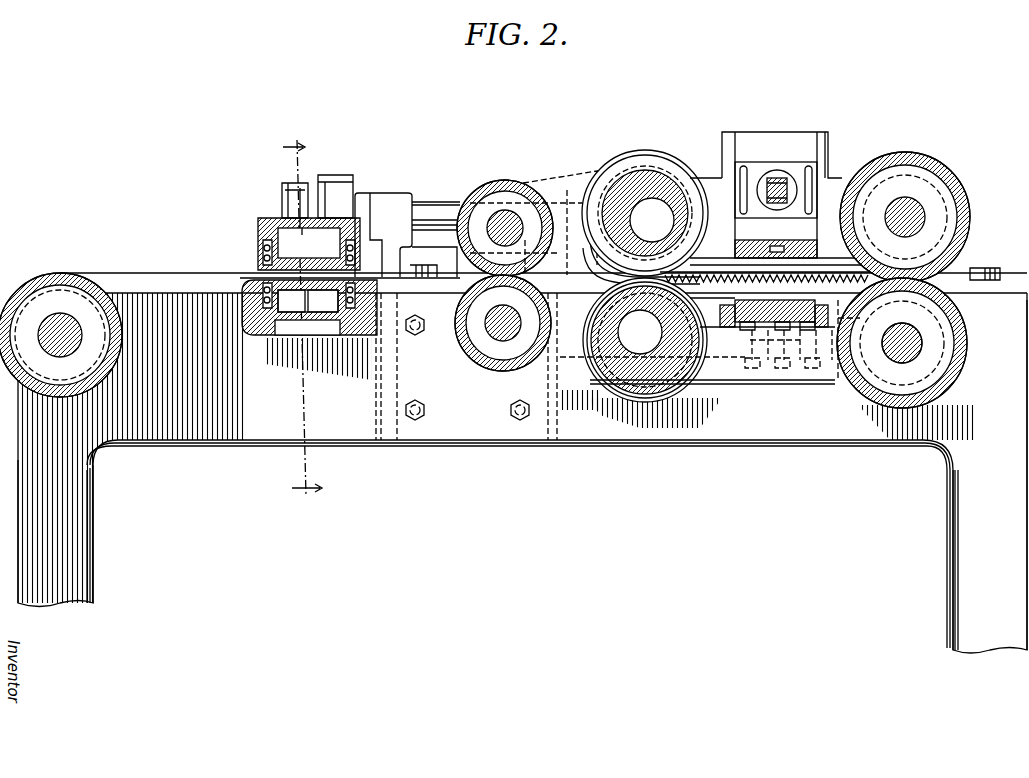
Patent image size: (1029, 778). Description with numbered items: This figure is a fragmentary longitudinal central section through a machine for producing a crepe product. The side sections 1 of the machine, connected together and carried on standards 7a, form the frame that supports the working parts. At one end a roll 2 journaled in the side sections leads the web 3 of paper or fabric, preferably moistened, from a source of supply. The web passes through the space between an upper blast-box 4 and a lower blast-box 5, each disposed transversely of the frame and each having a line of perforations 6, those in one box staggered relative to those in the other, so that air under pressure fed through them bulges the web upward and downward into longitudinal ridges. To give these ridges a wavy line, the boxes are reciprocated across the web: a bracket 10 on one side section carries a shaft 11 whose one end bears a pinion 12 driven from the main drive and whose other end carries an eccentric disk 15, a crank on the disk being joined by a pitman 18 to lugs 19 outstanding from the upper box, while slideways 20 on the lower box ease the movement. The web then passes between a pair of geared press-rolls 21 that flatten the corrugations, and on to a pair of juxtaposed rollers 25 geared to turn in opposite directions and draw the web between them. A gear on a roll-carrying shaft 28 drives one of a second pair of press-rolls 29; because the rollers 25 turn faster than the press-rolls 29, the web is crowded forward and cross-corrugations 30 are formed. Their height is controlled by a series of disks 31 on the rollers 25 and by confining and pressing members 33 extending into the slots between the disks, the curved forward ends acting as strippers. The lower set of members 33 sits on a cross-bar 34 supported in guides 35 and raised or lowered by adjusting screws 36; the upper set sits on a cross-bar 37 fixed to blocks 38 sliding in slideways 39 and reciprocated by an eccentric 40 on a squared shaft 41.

The side sections 1 is at (295, 440).
The roll 2 is at (62, 273).
The web 3 is at (182, 272).
The upper blast-box 4 is at (258, 236).
The lower blast-box 5 is at (291, 301).
The perforations 6 is at (323, 301).
The frame leg 7a is at (95, 525).
The bracket 10 is at (388, 193).
The shaft 11 is at (437, 202).
The pinion 12 is at (598, 171).
The disk 15 is at (333, 175).
The pitman 18 is at (298, 183).
The lugs 19 is at (282, 195).
The slideways 20 is at (252, 336).
The press-rolls 21 is at (500, 203).
The rollers 25 is at (638, 188).
The roll-carrying shaft 28 is at (923, 345).
The press-rolls 29 is at (971, 217).
The cross-corrugations 30 is at (770, 283).
The disks 31 is at (683, 175).
The confining and pressing members 33 is at (718, 272).
The cross-bar 34 is at (800, 300).
The guides 35 is at (838, 318).
The adjusting screws 36 is at (748, 368).
The cross-bar 37 is at (812, 248).
The blocks 38 is at (776, 202).
The slideways 39 is at (735, 132).
The eccentric 40 is at (780, 178).
The shaft 41 is at (812, 176).